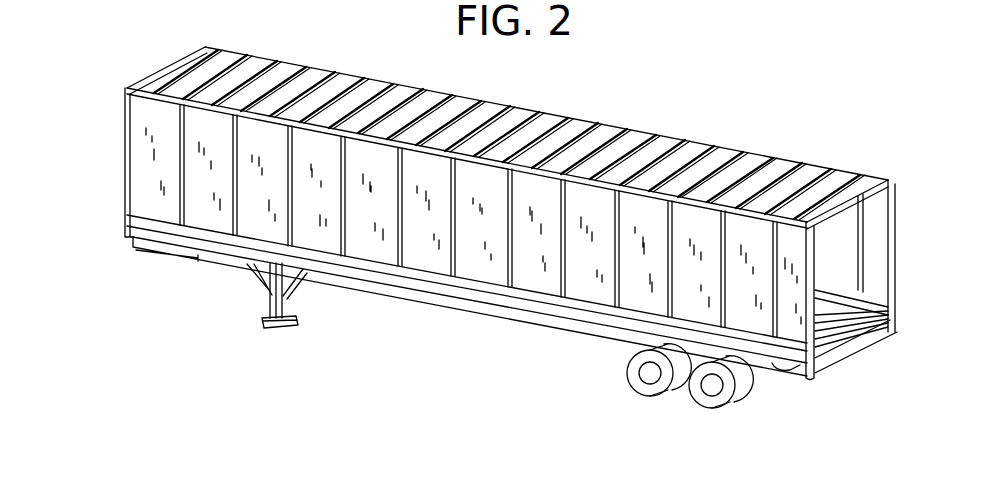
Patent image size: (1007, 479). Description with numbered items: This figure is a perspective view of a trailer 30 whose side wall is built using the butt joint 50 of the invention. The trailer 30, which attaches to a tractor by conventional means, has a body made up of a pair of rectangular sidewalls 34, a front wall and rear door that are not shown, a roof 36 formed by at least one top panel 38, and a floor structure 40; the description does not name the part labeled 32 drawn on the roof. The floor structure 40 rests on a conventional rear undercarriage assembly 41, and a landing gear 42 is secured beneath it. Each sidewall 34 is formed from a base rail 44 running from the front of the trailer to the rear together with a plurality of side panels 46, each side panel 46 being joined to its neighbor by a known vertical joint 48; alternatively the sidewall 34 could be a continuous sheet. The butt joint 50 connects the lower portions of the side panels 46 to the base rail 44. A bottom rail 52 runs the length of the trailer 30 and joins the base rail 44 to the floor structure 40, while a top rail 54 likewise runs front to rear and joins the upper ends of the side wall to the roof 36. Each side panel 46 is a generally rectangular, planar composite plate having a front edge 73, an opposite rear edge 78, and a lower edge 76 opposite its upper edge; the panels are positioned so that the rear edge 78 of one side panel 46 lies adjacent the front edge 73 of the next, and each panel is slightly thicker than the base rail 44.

The trailer 30 is at (707, 132).
The roof 32 is at (449, 104).
The sidewall 34 is at (350, 284).
The roof 36 is at (565, 132).
The top panel 38 is at (621, 142).
The floor structure 40 is at (835, 343).
The rear undercarriage assembly 41 is at (672, 403).
The landing gear 42 is at (296, 326).
The base rail 44 is at (537, 306).
The side panel 46 is at (492, 238).
The vertical joint 48 is at (618, 320).
The butt joint 50 is at (638, 316).
The bottom rail 52 is at (792, 370).
The top rail 54 is at (125, 101).
The front edge 73 is at (252, 122).
The lower edge 76 is at (250, 231).
The rear edge 78 is at (283, 127).